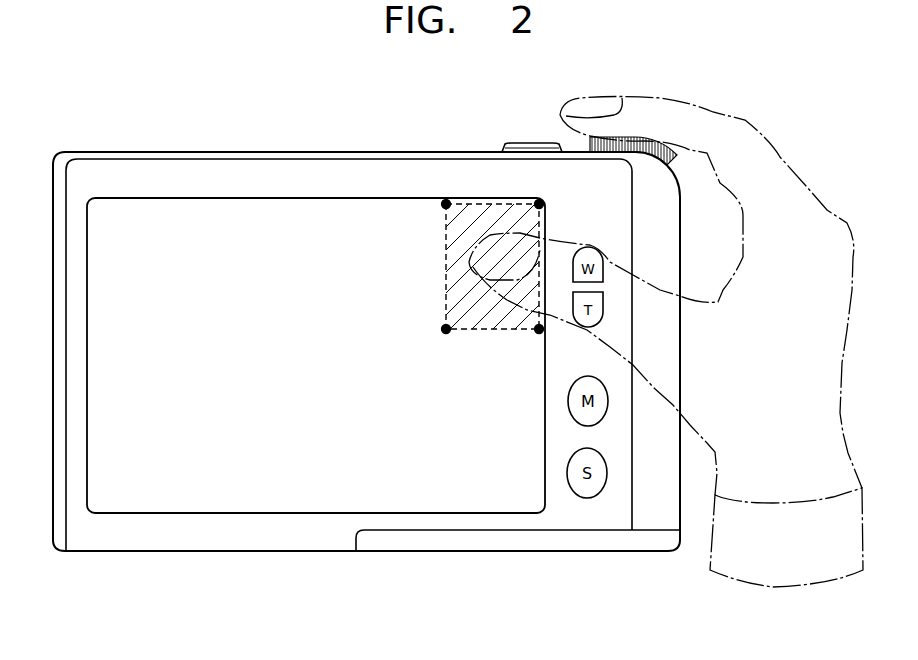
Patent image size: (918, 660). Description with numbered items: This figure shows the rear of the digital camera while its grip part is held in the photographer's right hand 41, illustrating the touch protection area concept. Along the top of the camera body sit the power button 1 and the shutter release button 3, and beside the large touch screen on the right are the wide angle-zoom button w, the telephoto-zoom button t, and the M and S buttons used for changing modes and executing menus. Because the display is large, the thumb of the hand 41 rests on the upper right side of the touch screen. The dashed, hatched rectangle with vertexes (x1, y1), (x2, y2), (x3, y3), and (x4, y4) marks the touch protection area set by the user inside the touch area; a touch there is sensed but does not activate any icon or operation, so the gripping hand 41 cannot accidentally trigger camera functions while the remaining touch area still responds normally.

The power button 1 is at (538, 143).
The shutter release button 3 is at (645, 150).
The right hand 41 is at (743, 128).